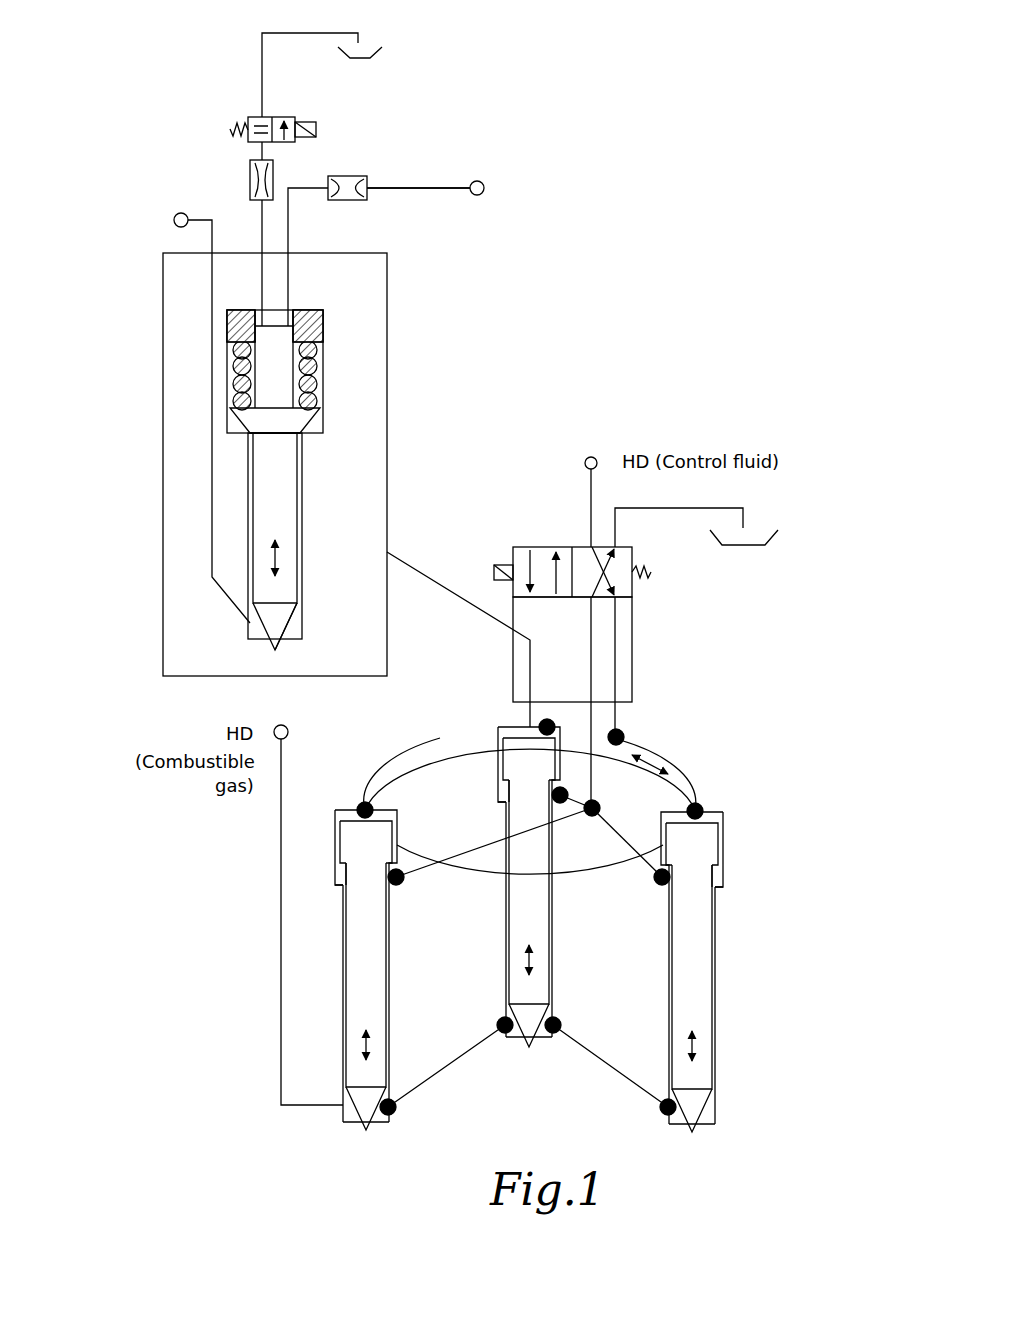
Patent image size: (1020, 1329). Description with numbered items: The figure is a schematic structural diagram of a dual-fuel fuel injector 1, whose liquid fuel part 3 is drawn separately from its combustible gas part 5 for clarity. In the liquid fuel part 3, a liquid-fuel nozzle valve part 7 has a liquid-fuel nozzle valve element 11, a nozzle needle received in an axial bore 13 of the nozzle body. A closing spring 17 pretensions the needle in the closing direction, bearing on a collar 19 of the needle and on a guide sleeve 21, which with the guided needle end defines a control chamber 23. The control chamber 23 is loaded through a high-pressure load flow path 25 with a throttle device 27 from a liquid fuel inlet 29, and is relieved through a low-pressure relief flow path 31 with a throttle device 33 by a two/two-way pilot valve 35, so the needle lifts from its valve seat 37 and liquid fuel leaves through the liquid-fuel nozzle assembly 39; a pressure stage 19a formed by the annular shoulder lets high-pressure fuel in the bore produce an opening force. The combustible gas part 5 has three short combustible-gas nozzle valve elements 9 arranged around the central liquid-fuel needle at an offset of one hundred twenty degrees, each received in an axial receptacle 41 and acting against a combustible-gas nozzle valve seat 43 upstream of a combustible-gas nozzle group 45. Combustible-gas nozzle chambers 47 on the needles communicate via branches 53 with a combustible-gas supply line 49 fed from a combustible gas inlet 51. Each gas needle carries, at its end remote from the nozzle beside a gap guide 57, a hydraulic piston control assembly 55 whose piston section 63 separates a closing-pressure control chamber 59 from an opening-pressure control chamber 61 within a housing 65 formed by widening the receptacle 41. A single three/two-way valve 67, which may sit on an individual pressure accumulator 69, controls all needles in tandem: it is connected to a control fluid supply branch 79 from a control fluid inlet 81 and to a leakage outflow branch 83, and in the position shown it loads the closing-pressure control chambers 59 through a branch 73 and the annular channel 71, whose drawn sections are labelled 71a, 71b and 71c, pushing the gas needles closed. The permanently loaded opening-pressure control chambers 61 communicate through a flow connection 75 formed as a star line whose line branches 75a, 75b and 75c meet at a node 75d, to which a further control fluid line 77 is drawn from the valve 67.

The fuel injector 1 is at (553, 372).
The liquid fuel part 3 is at (210, 100).
The combustible gas part 5 is at (744, 730).
The liquid-fuel nozzle valve part 7 is at (188, 468).
The combustible-gas nozzle valve element 9 is at (529, 944).
The liquid-fuel nozzle valve element 11 is at (275, 518).
The axial bore 13 is at (302, 520).
The closing spring 17 is at (318, 362).
The collar 19 is at (314, 415).
The pressure stage 19a is at (285, 420).
The guide sleeve 21 is at (304, 371).
The control chamber 23 is at (288, 318).
The load flow path 25 is at (418, 188).
The throttle device 27 is at (350, 176).
The liquid fuel inlet 29 is at (480, 196).
The relief flow path 31 is at (260, 215).
The throttle device 33 is at (250, 180).
The pilot valve 35 is at (293, 117).
The valve seat 37 is at (266, 645).
The liquid-fuel nozzle assembly 39 is at (285, 645).
The axial receptacle 41 is at (391, 1013).
The combustible-gas nozzle valve seat 43 is at (362, 1128).
The combustible-gas nozzle group 45 is at (371, 1133).
The combustible-gas nozzle chamber 47 is at (345, 1115).
The combustible-gas supply line 49 is at (279, 960).
The combustible gas inlet 51 is at (289, 731).
The branches 53 is at (425, 1095).
The piston control assembly 55 is at (357, 822).
The gap guide 57 is at (391, 1046).
The closing-pressure control chamber 59 is at (352, 808).
The opening-pressure control chamber 61 is at (337, 884).
The piston section 63 is at (340, 843).
The housing 65 is at (336, 869).
The 3/2-way valve 67 is at (558, 545).
The individual pressure accumulator 69 is at (633, 672).
The annular channel 71 is at (460, 724).
The gas ring line section 71a is at (420, 741).
The gas ring line section 71b is at (470, 878).
The gas ring line section 71c is at (665, 752).
The branch 73 is at (617, 632).
The flow connection 75 is at (529, 831).
The line branch 75a is at (478, 850).
The line branch 75b is at (566, 794).
The line branch 75c is at (652, 872).
The node 75d is at (600, 808).
The control fluid line 77 is at (590, 630).
The control fluid supply branch 79 is at (588, 480).
The control fluid inlet 81 is at (590, 457).
The leakage outflow branch 83 is at (666, 510).